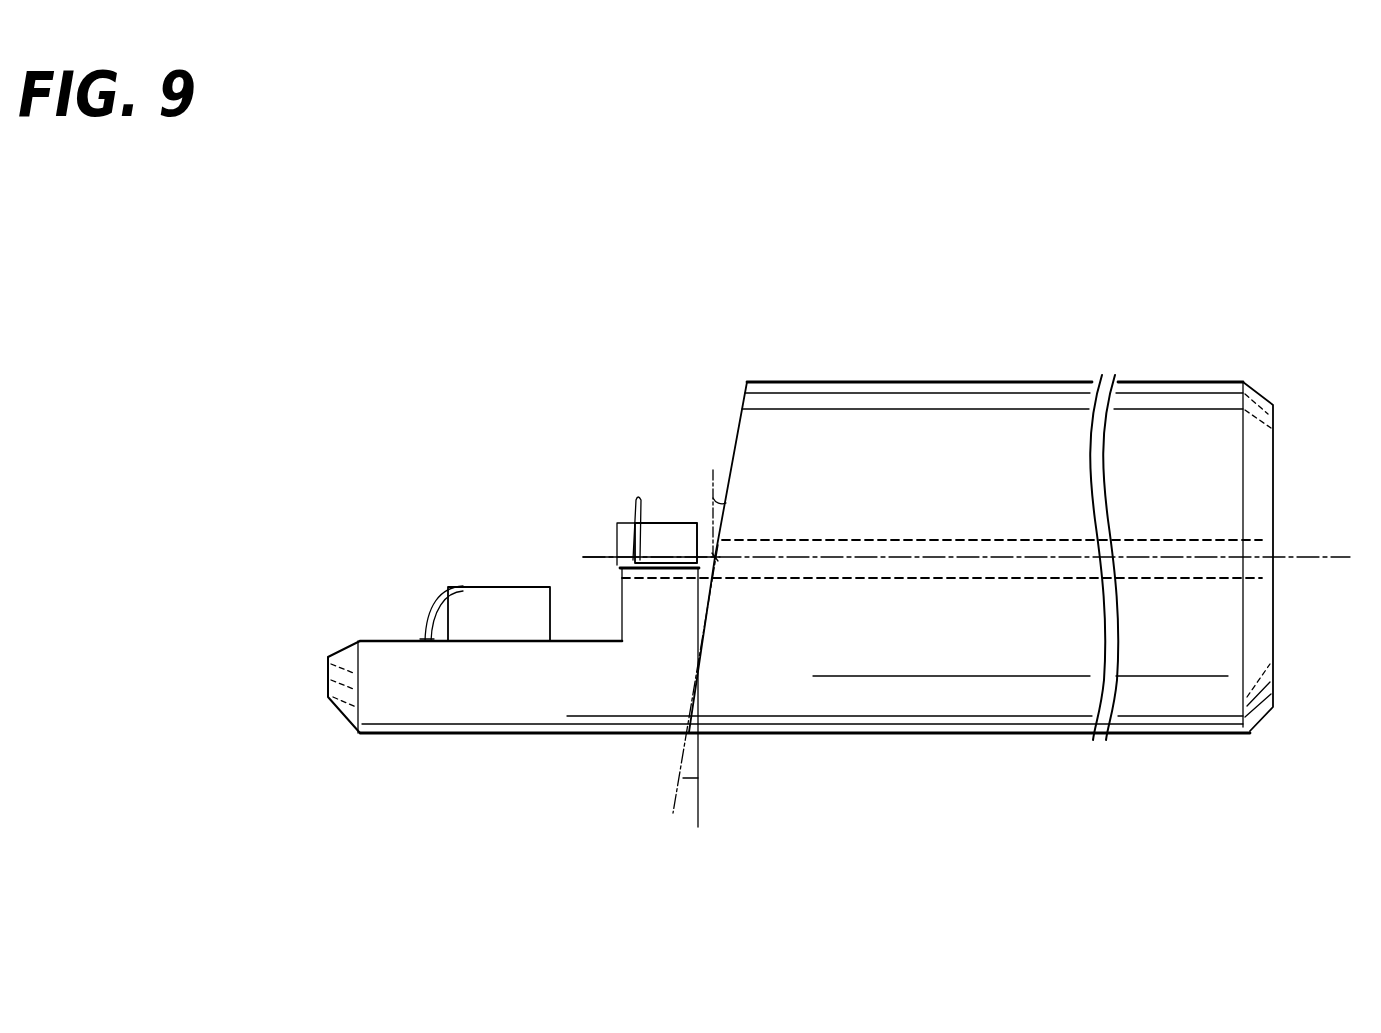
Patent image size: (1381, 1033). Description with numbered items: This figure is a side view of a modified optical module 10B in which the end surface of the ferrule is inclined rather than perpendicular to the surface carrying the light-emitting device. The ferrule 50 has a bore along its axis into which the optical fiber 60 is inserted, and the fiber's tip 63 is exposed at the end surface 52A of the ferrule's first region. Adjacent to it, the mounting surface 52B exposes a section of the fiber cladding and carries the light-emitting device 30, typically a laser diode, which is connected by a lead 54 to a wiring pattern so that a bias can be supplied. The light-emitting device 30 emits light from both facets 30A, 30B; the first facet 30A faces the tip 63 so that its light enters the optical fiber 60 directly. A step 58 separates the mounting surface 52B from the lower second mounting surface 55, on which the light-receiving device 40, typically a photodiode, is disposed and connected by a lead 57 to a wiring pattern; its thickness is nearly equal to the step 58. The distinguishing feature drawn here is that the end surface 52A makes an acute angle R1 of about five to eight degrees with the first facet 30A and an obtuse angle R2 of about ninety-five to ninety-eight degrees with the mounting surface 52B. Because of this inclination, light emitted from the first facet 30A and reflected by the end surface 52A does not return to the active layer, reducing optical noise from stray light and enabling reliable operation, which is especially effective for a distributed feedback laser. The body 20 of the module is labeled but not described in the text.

The optical module 10B is at (1167, 278).
The optical fiber holding member 20 is at (1188, 382).
The light-emitting device 30 is at (665, 520).
The first facet 30A is at (697, 520).
The facet 30B is at (617, 545).
The light-receiving device 40 is at (518, 583).
The ferrule 50 is at (1025, 423).
The end surface 52A is at (730, 488).
The mounting surface 52B is at (711, 585).
The lead 54 is at (633, 513).
The second mounting surface 55 is at (397, 635).
The lead 57 is at (441, 575).
The step 58 is at (622, 620).
The optical fiber 60 is at (1222, 549).
The tip 63 is at (720, 547).
The acute angle R1 is at (690, 782).
The obtuse angle R2 is at (717, 499).